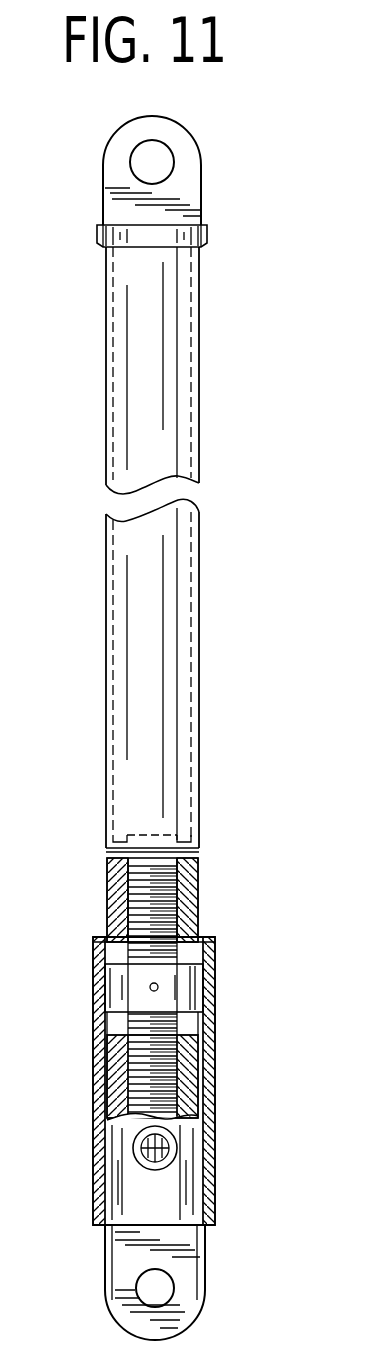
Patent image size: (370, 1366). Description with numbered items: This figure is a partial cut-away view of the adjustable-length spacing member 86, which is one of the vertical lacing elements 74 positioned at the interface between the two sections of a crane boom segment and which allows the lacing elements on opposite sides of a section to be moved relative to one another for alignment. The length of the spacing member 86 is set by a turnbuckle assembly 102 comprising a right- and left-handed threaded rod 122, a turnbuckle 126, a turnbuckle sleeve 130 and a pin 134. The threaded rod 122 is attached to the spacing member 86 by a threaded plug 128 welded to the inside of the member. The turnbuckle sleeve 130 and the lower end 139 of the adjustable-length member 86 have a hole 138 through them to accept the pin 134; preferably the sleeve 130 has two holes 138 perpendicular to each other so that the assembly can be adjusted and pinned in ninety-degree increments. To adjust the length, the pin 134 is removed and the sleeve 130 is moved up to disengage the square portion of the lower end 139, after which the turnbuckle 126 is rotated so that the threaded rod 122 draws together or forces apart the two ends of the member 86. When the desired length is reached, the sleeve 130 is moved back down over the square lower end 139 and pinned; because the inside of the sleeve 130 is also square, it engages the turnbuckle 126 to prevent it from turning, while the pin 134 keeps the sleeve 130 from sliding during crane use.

The vertical lacing element 74 is at (199, 349).
The adjustable-length spacing member 86 is at (199, 717).
The turnbuckle assembly 102 is at (92, 989).
The right- and left-handed threaded rod 122 is at (176, 913).
The turnbuckle 126 is at (183, 991).
The threaded plug 128 is at (203, 872).
The turnbuckle sleeve 130 is at (207, 1089).
The pin 134 is at (149, 1172).
The hole 138 is at (162, 1152).
The lower end 139 is at (199, 1268).